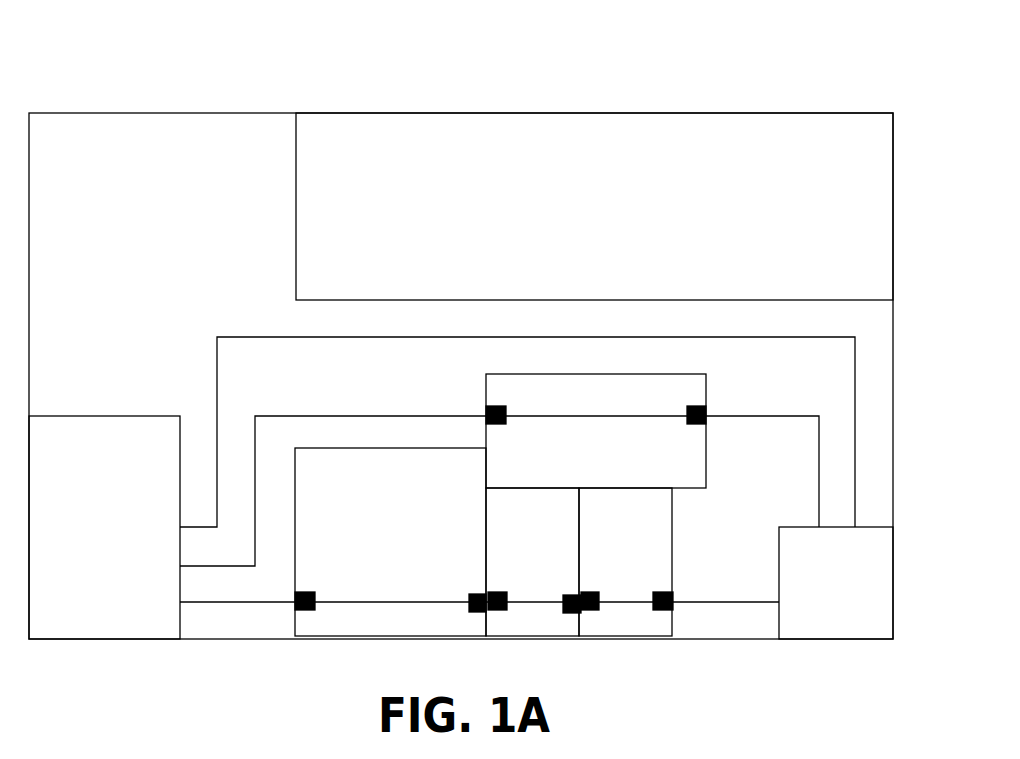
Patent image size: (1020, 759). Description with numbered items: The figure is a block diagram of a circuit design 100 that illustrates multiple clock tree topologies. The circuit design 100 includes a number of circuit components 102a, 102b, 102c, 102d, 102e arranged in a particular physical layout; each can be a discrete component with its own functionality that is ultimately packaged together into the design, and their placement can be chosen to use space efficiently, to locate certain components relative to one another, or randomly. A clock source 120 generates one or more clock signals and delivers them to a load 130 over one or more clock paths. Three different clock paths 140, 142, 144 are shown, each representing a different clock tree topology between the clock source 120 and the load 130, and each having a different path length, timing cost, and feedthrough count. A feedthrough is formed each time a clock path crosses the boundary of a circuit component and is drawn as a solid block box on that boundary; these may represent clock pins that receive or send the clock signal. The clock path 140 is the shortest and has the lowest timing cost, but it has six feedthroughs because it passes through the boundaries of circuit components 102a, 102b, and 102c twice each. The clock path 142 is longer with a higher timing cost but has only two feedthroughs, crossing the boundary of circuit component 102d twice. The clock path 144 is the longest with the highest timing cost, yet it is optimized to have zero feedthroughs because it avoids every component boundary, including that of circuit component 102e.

The circuit design 100 is at (690, 93).
The circuit component 102a is at (390, 542).
The circuit component 102b is at (533, 562).
The circuit component 102c is at (626, 562).
The circuit component 102d is at (596, 431).
The circuit component 102e is at (594, 206).
The clock source 120 is at (104, 527).
The load 130 is at (836, 583).
The clock path 140 is at (706, 601).
The clock path 142 is at (785, 417).
The clock path 144 is at (855, 378).